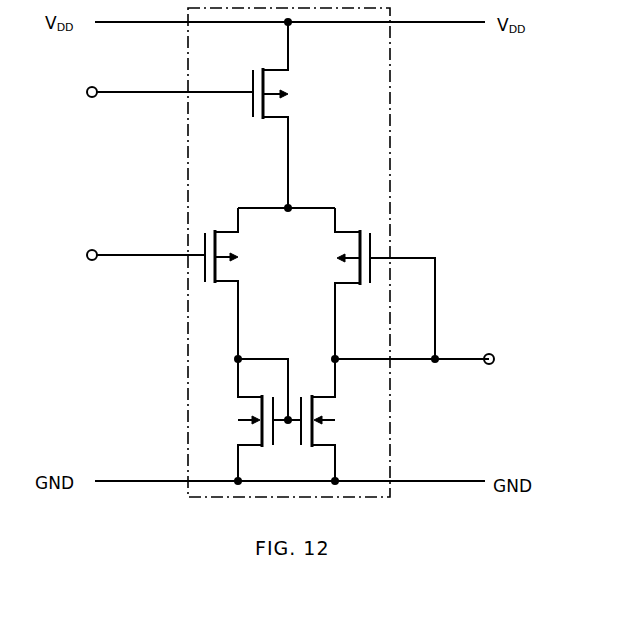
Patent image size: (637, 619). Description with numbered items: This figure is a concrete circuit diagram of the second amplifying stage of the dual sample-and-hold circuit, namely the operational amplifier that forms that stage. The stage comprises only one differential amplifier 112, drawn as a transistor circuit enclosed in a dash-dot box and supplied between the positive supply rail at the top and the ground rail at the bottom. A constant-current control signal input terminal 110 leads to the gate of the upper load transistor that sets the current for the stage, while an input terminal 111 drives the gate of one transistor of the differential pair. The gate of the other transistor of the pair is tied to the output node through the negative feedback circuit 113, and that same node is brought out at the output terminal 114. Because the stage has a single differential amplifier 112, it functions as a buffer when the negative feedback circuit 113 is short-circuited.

The constant-current control signal input terminal 110 is at (92, 97).
The input terminal 111 is at (92, 260).
The differential amplifier 112 is at (490, 127).
The negative feedback circuit 113 is at (435, 293).
The output terminal 114 is at (489, 364).